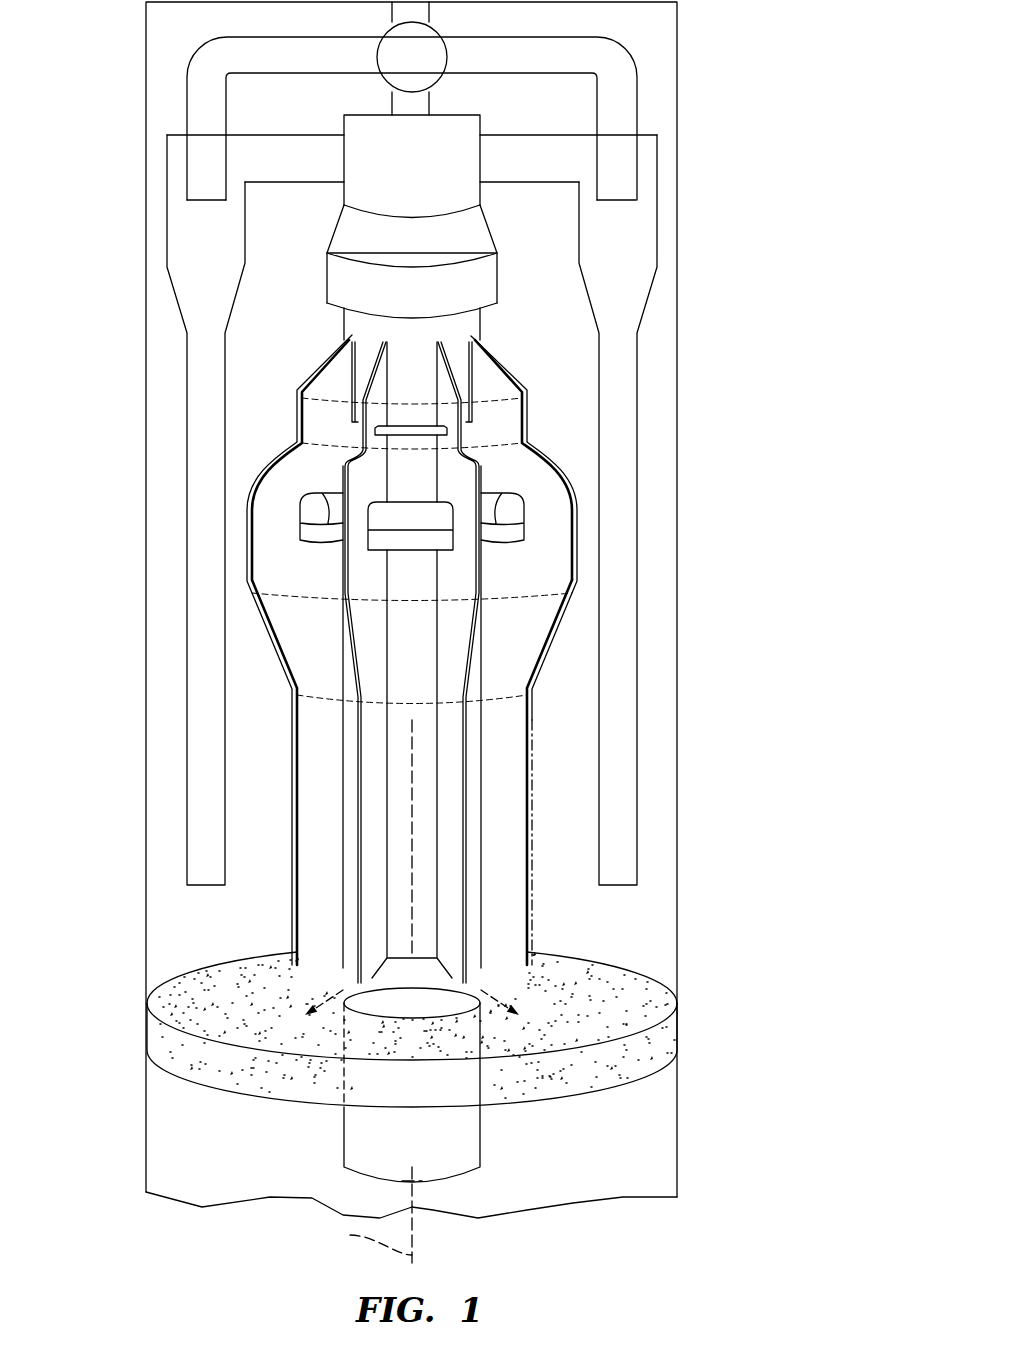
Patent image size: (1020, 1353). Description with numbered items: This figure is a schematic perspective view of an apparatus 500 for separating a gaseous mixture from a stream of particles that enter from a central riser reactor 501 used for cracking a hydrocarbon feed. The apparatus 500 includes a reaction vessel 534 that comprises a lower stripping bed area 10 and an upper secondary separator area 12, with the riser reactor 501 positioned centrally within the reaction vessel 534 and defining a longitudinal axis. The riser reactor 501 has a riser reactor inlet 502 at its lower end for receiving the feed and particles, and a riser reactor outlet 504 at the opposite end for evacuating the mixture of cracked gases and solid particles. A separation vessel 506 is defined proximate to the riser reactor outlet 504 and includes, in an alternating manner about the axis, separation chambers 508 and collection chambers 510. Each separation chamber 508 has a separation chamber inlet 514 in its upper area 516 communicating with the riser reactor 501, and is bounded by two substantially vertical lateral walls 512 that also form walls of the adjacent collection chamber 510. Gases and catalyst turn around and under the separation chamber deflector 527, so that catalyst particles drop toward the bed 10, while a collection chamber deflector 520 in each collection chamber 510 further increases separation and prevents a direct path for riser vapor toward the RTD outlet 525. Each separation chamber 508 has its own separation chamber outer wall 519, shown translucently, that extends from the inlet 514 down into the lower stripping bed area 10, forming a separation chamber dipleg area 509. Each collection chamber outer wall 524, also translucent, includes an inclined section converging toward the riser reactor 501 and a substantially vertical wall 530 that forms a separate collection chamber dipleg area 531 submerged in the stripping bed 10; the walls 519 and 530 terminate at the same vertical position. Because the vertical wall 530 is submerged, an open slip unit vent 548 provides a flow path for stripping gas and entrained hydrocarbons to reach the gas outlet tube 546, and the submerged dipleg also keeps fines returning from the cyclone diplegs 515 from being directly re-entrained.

The apparatus 500 is at (434, 632).
The reaction vessel 534 is at (677, 392).
The upper secondary separator area 12 is at (653, 780).
The cyclone diplegs 515 is at (188, 754).
The gas outlet tube 546 is at (460, 238).
The open slip unit vent 548 is at (333, 320).
The vertical lateral walls 512 is at (277, 530).
The separation vessel 506 is at (584, 489).
The vertical wall 530 is at (520, 725).
The collection chamber outer wall 524 is at (515, 640).
The collection chambers 510 is at (520, 578).
The separation chamber dipleg area 509 is at (497, 842).
The separation chambers 508 is at (407, 683).
The separation chamber inlet 514 is at (468, 390).
The RTD outlet 525 is at (481, 370).
The riser reactor outlet 504 is at (427, 470).
The upper area 516 is at (417, 445).
The separation chamber deflector 527 is at (380, 538).
The collection chamber deflector 520 is at (312, 513).
The separation chamber outer walls 519 is at (400, 838).
The collection chamber dipleg area 531 is at (397, 905).
The lower stripping bed area 10 is at (642, 972).
The riser reactor 501 is at (432, 1148).
The riser reactor inlet 502 is at (432, 1188).